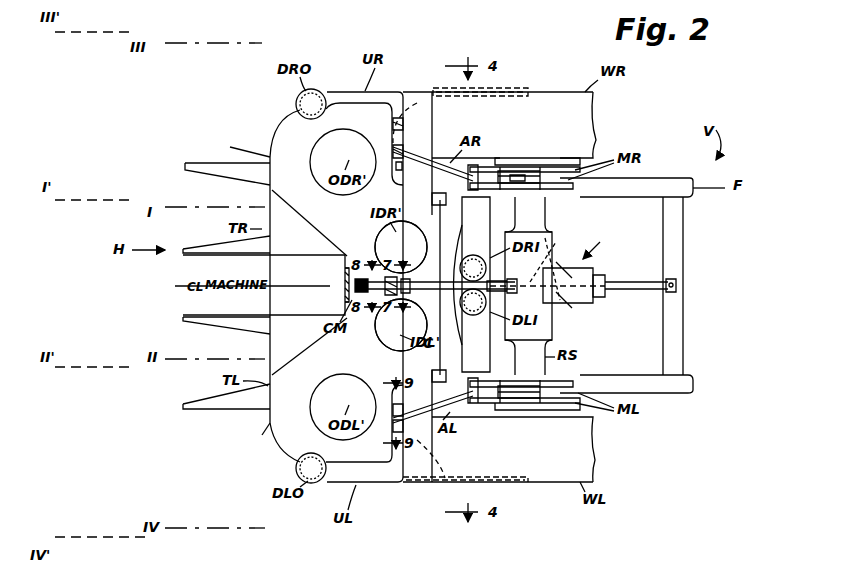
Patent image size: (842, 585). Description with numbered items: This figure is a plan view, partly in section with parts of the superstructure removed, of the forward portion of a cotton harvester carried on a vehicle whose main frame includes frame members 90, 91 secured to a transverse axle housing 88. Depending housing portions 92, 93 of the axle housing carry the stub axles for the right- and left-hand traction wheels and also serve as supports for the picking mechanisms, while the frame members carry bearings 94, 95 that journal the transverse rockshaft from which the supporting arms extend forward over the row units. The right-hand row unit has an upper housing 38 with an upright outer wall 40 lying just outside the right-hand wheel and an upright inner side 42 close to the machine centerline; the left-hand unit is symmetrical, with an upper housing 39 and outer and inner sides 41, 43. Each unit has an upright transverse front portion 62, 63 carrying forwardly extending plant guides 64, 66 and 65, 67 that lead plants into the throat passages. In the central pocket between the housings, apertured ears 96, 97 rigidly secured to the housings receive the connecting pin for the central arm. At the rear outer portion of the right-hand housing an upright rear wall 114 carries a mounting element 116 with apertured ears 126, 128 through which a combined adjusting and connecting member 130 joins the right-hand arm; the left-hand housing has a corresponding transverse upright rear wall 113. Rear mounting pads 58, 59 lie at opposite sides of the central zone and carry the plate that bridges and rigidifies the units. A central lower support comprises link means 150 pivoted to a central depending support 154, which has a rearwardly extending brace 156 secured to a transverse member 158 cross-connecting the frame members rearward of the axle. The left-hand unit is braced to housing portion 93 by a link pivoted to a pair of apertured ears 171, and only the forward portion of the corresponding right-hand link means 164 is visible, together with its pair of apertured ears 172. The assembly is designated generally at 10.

The machine tool / apparatus 10 is at (603, 240).
The upper housing 38 is at (278, 152).
The upper housing 39 is at (288, 430).
The upright outer wall 40 is at (393, 91).
The outer side portion 41 is at (385, 486).
The upright inner side 42 is at (345, 271).
The upright inner side 43 is at (345, 292).
The rear upright mounting portion 58 is at (488, 270).
The rear mounting pad 59 is at (488, 300).
The upright transverse front portion 62 is at (270, 160).
The upright transverse front portion 63 is at (268, 430).
The plant guide 64 is at (185, 166).
The plant guide 65 is at (193, 410).
The plant guide 66 is at (183, 252).
The plant guide 67 is at (183, 319).
The transverse axle housing 88 is at (545, 218).
The frame member 90 is at (668, 178).
The frame member 91 is at (690, 391).
The depending housing portion 92 is at (568, 158).
The depending housing portion 93 is at (560, 411).
The bearing 94 is at (505, 175).
The bearing 95 is at (480, 403).
The apertured ear 96 is at (422, 248).
The apertured ear 97 is at (428, 315).
The transverse upright rear wall 113 is at (393, 428).
The upright rear wall 114 is at (392, 121).
The mounting element 116 is at (393, 147).
The apertured ear 126 is at (425, 122).
The apertured ear 128 is at (400, 170).
The combined adjusting and connecting member 130 is at (428, 100).
The link means 150 is at (556, 256).
The central depending support 154 is at (566, 306).
The rearwardly extending brace 156 is at (614, 294).
The transverse member 158 is at (683, 324).
The link means 164 is at (472, 284).
The apertured ears 171 is at (446, 376).
The apertured ears 172 is at (446, 192).